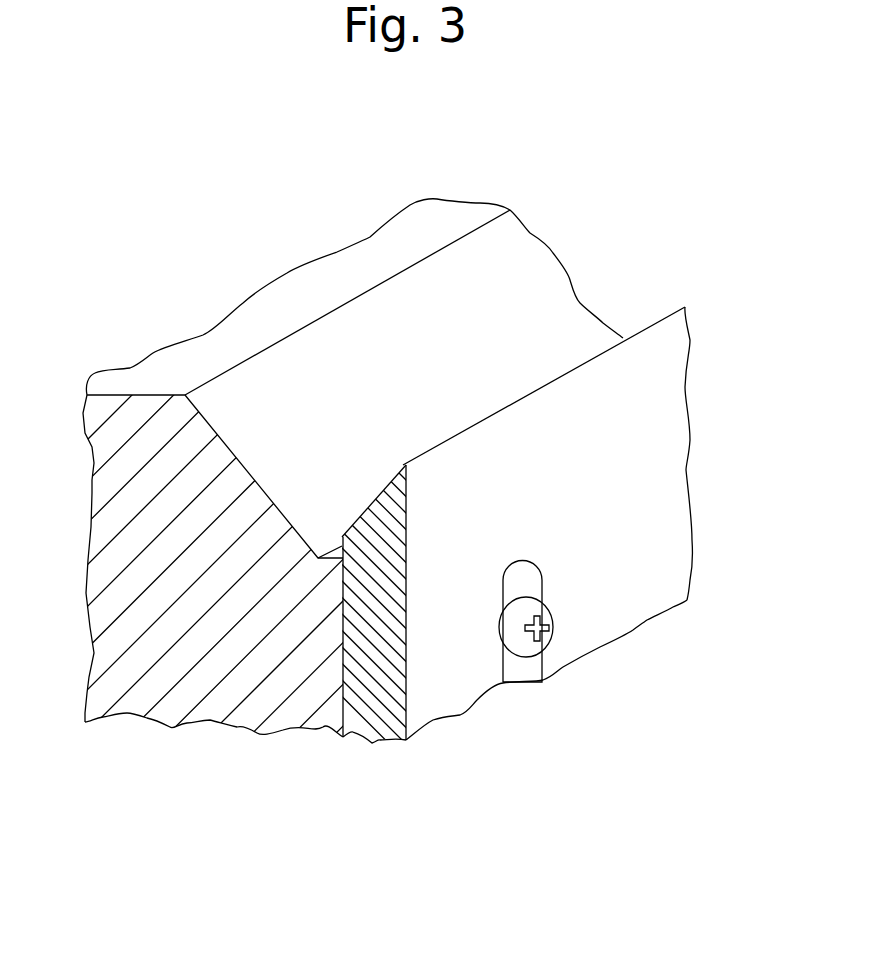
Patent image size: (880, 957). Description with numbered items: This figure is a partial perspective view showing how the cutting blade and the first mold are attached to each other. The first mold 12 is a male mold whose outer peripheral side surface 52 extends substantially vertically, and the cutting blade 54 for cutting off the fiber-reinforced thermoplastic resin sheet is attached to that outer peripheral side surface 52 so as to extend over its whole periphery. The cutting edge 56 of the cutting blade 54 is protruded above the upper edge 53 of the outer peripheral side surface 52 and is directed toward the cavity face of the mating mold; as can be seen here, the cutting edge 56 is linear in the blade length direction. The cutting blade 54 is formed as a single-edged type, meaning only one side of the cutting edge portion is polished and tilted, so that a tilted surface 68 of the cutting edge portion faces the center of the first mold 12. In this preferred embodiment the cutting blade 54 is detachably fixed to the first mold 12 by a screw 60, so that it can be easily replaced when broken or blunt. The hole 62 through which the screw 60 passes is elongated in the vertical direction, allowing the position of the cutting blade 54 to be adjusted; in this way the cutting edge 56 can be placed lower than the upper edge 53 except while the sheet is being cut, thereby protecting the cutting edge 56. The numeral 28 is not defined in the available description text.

The first mold 12 is at (305, 262).
The top surface 28 is at (503, 253).
The cutting edge 56 is at (485, 413).
The cutting blade 54 is at (660, 450).
The tilted surface 68 is at (378, 500).
The upper edge 53 is at (342, 547).
The outer peripheral side surface 52 is at (372, 743).
The hole 62 is at (525, 577).
The screw 60 is at (548, 608).